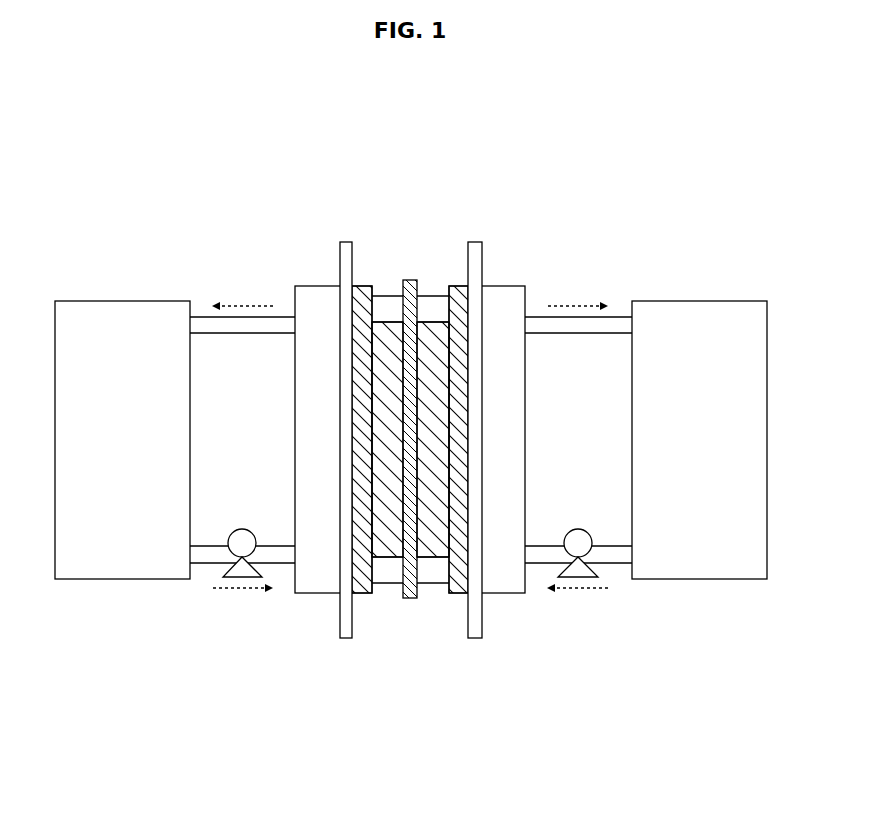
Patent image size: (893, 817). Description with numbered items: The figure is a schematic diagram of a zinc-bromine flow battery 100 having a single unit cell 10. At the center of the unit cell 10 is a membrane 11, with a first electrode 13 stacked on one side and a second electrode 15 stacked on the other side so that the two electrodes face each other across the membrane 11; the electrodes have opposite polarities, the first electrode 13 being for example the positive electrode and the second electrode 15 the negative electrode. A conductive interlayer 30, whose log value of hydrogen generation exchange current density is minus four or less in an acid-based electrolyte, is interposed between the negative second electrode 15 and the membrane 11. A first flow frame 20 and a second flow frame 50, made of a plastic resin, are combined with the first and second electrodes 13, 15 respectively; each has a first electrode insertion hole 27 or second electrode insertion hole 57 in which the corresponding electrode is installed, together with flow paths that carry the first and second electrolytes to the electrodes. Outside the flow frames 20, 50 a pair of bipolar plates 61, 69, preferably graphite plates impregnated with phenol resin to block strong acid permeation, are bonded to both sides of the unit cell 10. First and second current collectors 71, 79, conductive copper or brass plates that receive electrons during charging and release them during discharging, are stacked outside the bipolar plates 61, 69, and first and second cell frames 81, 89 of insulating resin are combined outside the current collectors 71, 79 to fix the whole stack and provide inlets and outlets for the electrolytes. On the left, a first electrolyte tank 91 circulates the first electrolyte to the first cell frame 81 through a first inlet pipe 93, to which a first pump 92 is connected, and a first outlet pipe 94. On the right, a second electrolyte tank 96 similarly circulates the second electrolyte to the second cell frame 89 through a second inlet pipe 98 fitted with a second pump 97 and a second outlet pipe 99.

The zinc-bromine flow battery 100 is at (613, 160).
The unit cell 10 is at (412, 468).
The membrane 11 is at (410, 504).
The first electrode 13 is at (397, 550).
The second electrode 15 is at (425, 550).
The first flow frame 20 is at (385, 571).
The second flow frame 50 is at (437, 571).
The first electrode insertion hole 27 is at (388, 328).
The second electrode insertion hole 57 is at (433, 328).
The conductive interlayer 30 is at (453, 504).
The bipolar plate 61 is at (362, 286).
The bipolar plate 69 is at (460, 286).
The first current collector 71 is at (346, 242).
The second current collector 79 is at (473, 242).
The first cell frame 81 is at (325, 286).
The second cell frame 89 is at (497, 286).
The first electrolyte tank 91 is at (120, 300).
The first pump 92 is at (245, 529).
The first inlet pipe 93 is at (204, 565).
The first outlet pipe 94 is at (235, 333).
The second electrolyte tank 96 is at (703, 300).
The second pump 97 is at (578, 529).
The second inlet pipe 98 is at (617, 565).
The second outlet pipe 99 is at (585, 333).